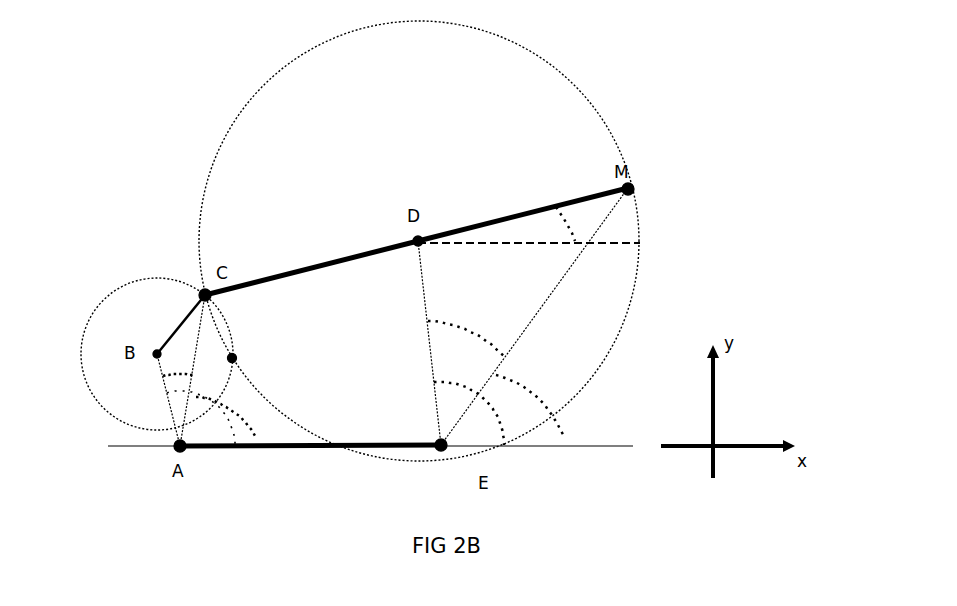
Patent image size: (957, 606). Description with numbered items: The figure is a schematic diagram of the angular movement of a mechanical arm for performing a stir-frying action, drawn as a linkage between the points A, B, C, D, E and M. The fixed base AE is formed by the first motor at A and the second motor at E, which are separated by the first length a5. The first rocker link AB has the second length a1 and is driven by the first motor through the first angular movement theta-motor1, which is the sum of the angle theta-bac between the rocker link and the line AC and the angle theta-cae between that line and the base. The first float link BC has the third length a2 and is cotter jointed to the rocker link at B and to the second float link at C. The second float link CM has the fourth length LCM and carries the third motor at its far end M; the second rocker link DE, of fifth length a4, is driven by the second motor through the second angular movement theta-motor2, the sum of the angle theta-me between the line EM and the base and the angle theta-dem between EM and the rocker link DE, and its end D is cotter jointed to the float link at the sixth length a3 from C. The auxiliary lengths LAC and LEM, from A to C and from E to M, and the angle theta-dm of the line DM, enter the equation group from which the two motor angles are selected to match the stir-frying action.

The second length a1 is at (156, 398).
The third length a2 is at (181, 324).
The sixth length a3 is at (311, 268).
The fifth length a4 is at (418, 343).
The first length a5 is at (310, 460).
The fourth length LCM is at (489, 212).
The length between A and C LAC is at (222, 370).
The length between E and M LEM is at (534, 316).
The angle BAC theta-bac is at (149, 384).
The first angular movement theta-motor1 is at (217, 442).
The angle CAE theta-cae is at (239, 418).
The second angular movement theta-motor2 is at (432, 412).
The angle DEM theta-dem is at (466, 325).
The angle ME theta-me is at (534, 402).
The angle DM theta-dm is at (547, 205).